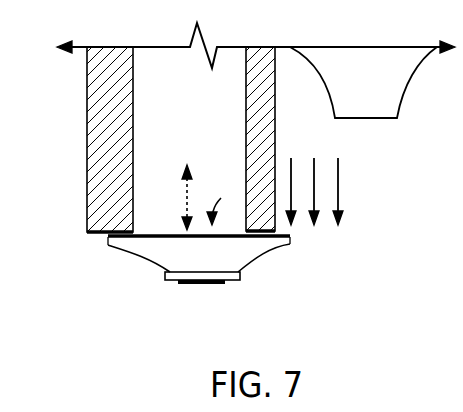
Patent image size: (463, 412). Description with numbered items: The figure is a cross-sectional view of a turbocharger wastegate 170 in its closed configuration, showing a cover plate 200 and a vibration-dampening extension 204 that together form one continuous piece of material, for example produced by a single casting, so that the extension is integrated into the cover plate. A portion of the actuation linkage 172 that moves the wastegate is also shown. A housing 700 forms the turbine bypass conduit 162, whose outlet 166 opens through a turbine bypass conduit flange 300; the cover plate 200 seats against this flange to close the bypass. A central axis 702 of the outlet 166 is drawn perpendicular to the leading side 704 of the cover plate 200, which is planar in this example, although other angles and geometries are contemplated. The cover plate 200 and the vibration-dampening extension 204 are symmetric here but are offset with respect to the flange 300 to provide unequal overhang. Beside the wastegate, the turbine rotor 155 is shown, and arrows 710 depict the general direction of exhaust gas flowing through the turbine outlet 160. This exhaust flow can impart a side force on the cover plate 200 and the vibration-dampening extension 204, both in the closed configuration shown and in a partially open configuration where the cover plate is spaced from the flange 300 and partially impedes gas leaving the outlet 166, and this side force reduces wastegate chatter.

The turbine rotor 155 is at (314, 62).
The turbine outlet 160 is at (389, 182).
The turbine bypass conduit 162 is at (203, 110).
The outlet of the turbine bypass conduit 166 is at (215, 202).
The turbocharger wastegate 170 is at (198, 310).
The actuation linkage 172 is at (168, 281).
The cover plate 200 is at (150, 262).
The vibration-dampening extension 204 is at (262, 247).
The turbine bypass conduit flange 300 is at (106, 242).
The housing of the turbine bypass conduit 700 is at (126, 68).
The central axis of the outlet 702 is at (183, 185).
The leading side of the cover plate 704 is at (177, 235).
The arrows 710 is at (338, 160).